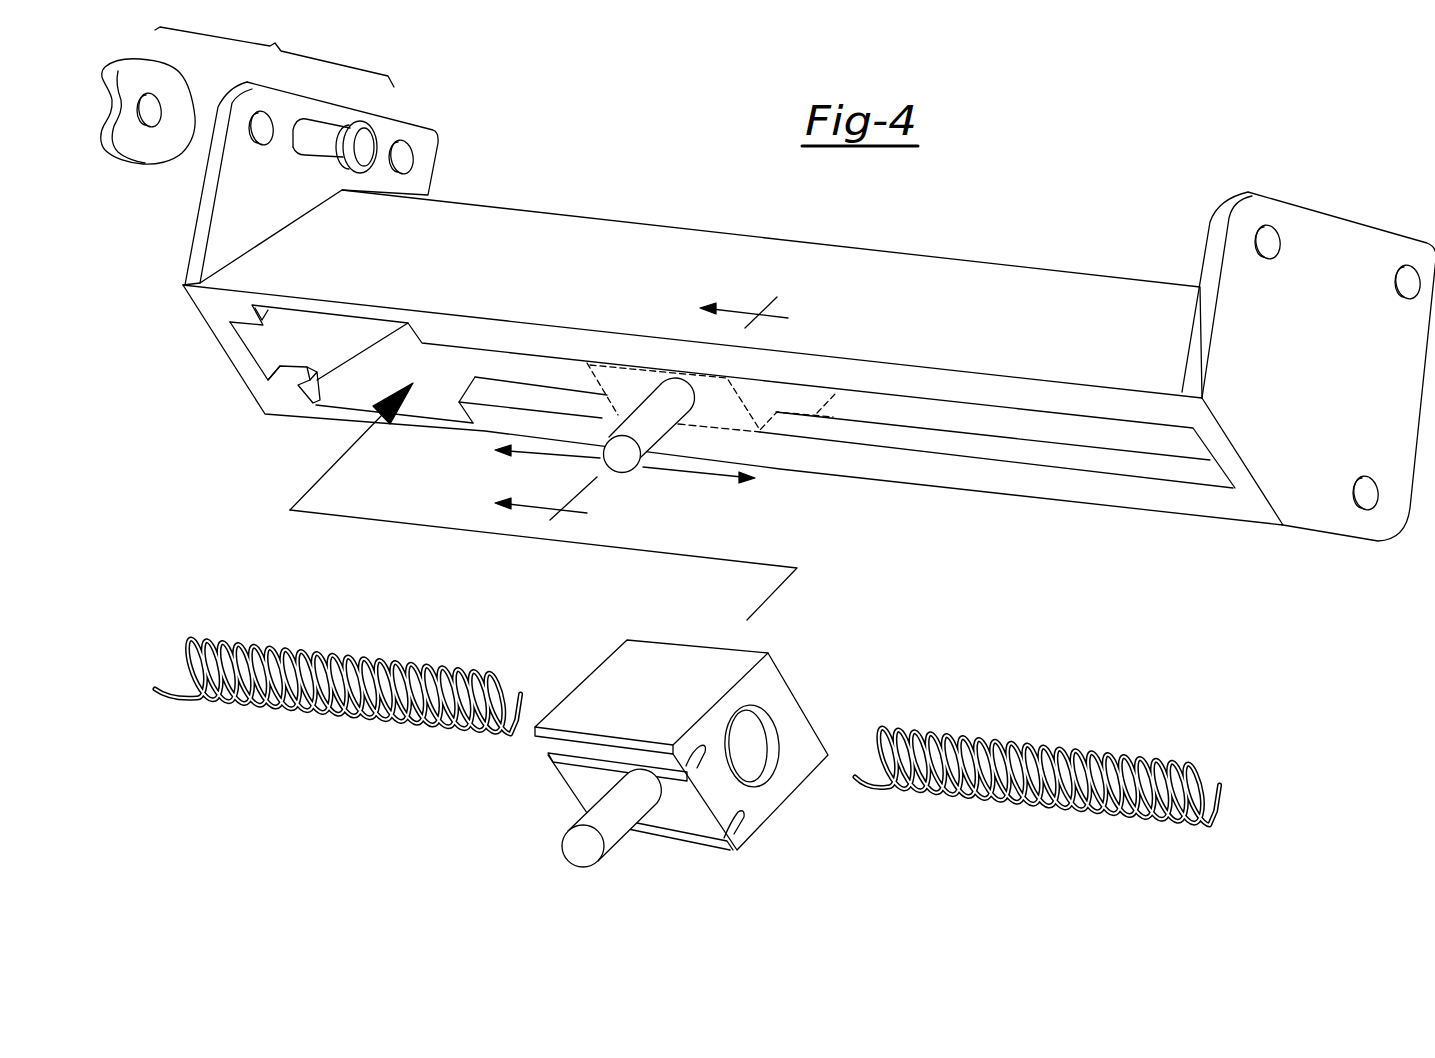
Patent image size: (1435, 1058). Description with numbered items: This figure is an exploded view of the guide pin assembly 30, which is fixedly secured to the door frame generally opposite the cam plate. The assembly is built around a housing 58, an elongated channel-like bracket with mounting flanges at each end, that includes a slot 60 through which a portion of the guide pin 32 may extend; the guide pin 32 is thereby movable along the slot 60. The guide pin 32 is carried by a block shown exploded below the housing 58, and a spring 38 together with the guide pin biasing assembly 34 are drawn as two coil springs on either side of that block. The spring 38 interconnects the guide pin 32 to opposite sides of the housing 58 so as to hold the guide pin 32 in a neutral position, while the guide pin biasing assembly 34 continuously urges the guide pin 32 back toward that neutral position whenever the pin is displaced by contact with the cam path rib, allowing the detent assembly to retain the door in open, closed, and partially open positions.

The guide pin assembly 30 is at (408, 787).
The guide pin 32 is at (792, 698).
The guide pin biasing assembly 34 is at (963, 737).
The spring 38 is at (363, 660).
The housing 58 is at (218, 302).
The slot 60 is at (1110, 442).